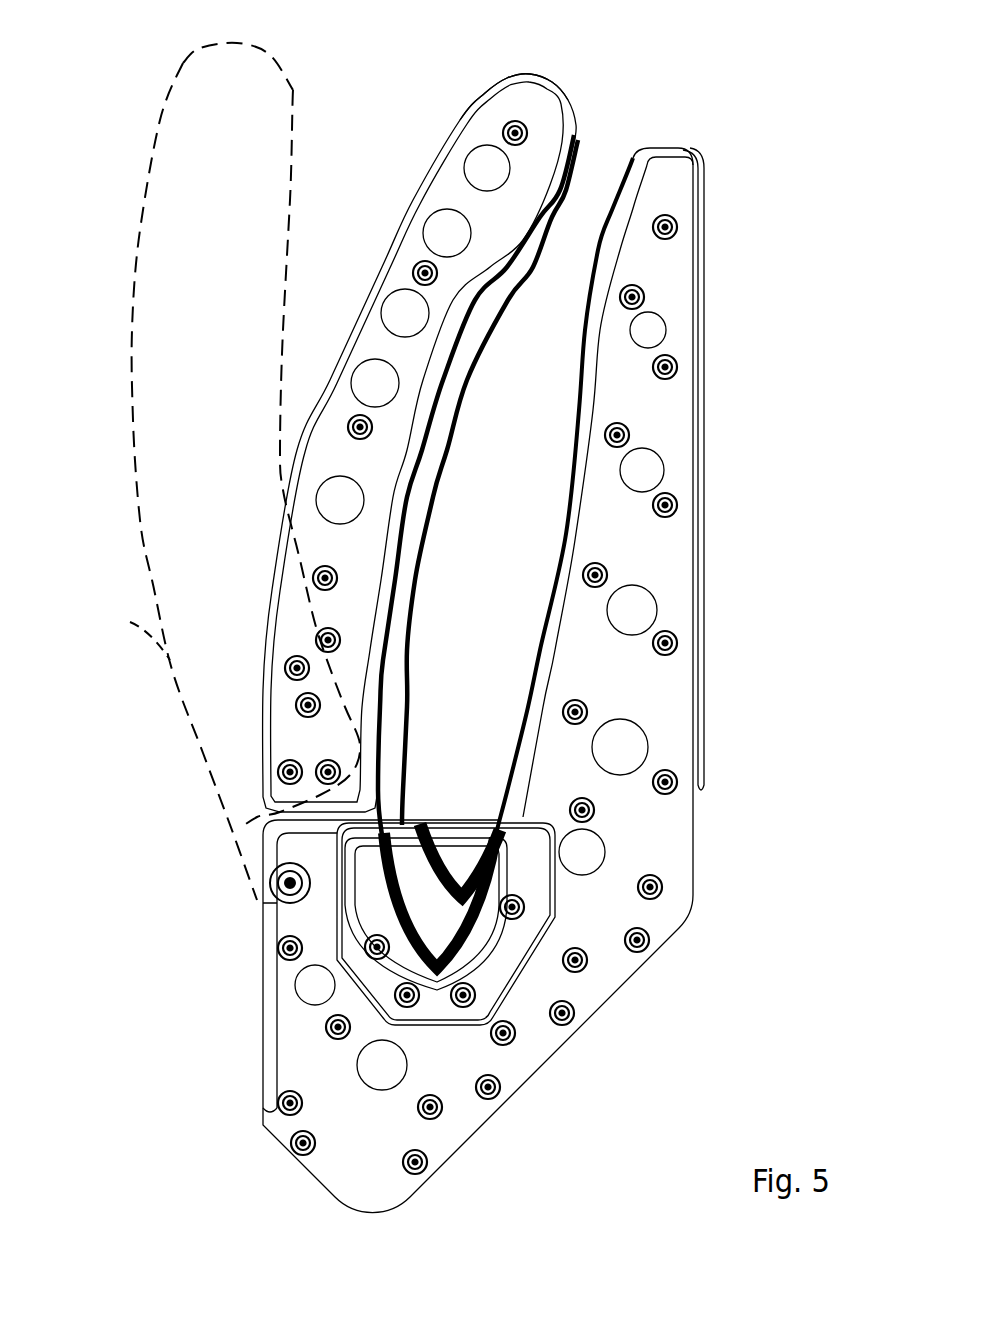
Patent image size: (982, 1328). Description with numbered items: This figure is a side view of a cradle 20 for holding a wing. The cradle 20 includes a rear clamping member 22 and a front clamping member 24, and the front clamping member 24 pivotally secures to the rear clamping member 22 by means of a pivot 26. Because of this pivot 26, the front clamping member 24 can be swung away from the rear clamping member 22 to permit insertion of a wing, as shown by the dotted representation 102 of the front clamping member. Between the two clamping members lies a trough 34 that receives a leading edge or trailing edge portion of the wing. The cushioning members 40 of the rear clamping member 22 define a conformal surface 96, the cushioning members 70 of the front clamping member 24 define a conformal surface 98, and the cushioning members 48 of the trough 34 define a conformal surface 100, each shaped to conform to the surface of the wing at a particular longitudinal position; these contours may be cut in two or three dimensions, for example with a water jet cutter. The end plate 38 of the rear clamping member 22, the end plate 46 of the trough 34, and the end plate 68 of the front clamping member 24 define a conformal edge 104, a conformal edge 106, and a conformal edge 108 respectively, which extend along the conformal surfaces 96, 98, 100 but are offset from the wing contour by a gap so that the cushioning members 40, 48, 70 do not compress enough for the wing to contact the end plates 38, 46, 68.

The cradle 20 is at (140, 128).
The rear clamping member 22 is at (752, 470).
The front clamping member 24 is at (172, 780).
The pivot 26 is at (240, 900).
The trough 34 is at (315, 910).
The end plate 38 is at (425, 240).
The cushioning members 40 is at (685, 152).
The end plate 46 is at (534, 888).
The cushioning members 48 is at (513, 830).
The end plate 68 is at (386, 473).
The cushioning members 70 is at (477, 90).
The conformal surface 96 is at (540, 657).
The conformal surface 98 is at (437, 483).
The conformal surface 100 is at (405, 840).
The dotted representation of the front clamping member 102 is at (129, 634).
The conformal edge 104 is at (587, 430).
The conformal edge 106 is at (462, 387).
The conformal edge 108 is at (502, 923).